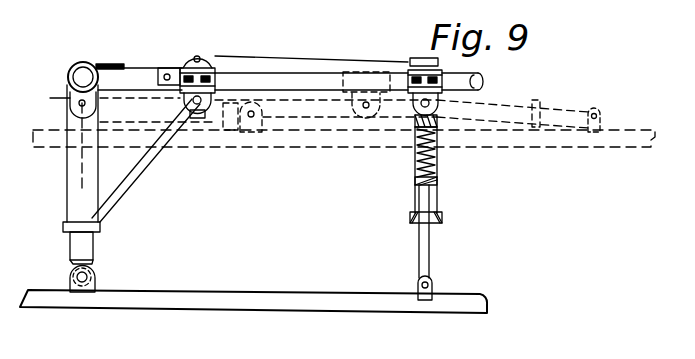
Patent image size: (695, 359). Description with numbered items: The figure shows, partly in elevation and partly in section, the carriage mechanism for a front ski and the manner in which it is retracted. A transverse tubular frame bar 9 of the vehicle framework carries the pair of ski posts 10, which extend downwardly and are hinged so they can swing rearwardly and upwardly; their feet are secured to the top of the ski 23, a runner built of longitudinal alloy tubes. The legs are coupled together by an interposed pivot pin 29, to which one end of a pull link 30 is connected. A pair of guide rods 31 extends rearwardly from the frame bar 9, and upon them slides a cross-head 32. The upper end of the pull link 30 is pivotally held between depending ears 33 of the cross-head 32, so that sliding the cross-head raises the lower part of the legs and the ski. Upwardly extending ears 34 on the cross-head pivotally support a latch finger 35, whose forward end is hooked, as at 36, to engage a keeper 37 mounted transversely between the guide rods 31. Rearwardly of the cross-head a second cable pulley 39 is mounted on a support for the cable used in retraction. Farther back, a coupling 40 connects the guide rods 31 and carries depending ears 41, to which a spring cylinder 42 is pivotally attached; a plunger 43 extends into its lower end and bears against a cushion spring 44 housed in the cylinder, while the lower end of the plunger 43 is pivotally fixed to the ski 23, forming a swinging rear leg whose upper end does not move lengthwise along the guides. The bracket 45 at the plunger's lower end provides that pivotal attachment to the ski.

The frame bar 9 is at (83, 62).
The ski posts 10 is at (47, 92).
The ski 23 is at (177, 298).
The pivot pin 29 is at (66, 229).
The pull link 30 is at (135, 180).
The guide rods 31 is at (484, 78).
The sliding cross-head 32 is at (228, 60).
The depending ears 33 is at (213, 116).
The upwardly extending ears 34 is at (203, 54).
The latch finger 35 is at (175, 66).
The hook 36 is at (139, 63).
The keeper 37 is at (166, 98).
The second cable pulley 39 is at (411, 58).
The coupling 40 is at (409, 99).
The depending ears 41 is at (413, 94).
The spring cylinder 42 is at (415, 172).
The plunger 43 is at (429, 230).
The cushion spring 44 is at (437, 152).
The bottom bracket 45 is at (418, 289).